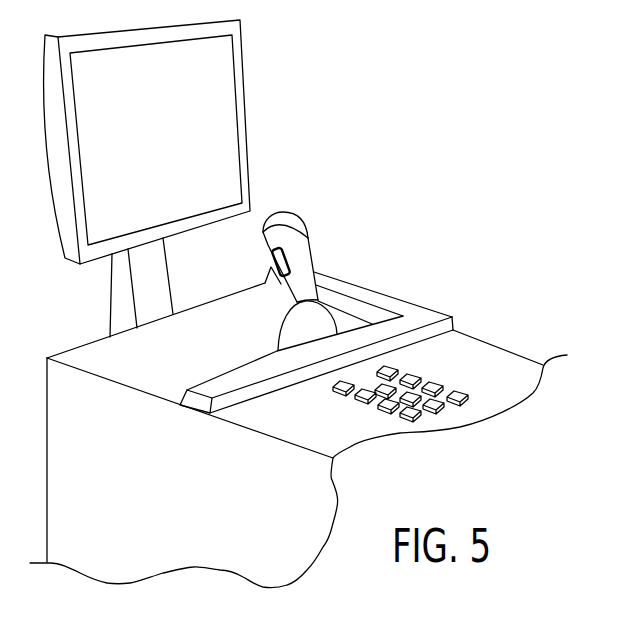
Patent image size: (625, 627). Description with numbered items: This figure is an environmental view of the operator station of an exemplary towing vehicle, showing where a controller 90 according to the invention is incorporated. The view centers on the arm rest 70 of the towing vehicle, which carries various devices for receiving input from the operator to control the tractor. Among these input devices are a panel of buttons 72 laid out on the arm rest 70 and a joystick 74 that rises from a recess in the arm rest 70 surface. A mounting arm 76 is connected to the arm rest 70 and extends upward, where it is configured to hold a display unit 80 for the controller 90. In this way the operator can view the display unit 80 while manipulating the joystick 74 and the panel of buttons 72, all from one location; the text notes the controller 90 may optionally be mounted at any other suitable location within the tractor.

The controller 90 is at (307, 170).
The display unit 80 is at (223, 73).
The mounting arm 76 is at (106, 299).
The joystick 74 is at (317, 255).
The arm rest 70 is at (455, 331).
The panel of buttons 72 is at (442, 378).